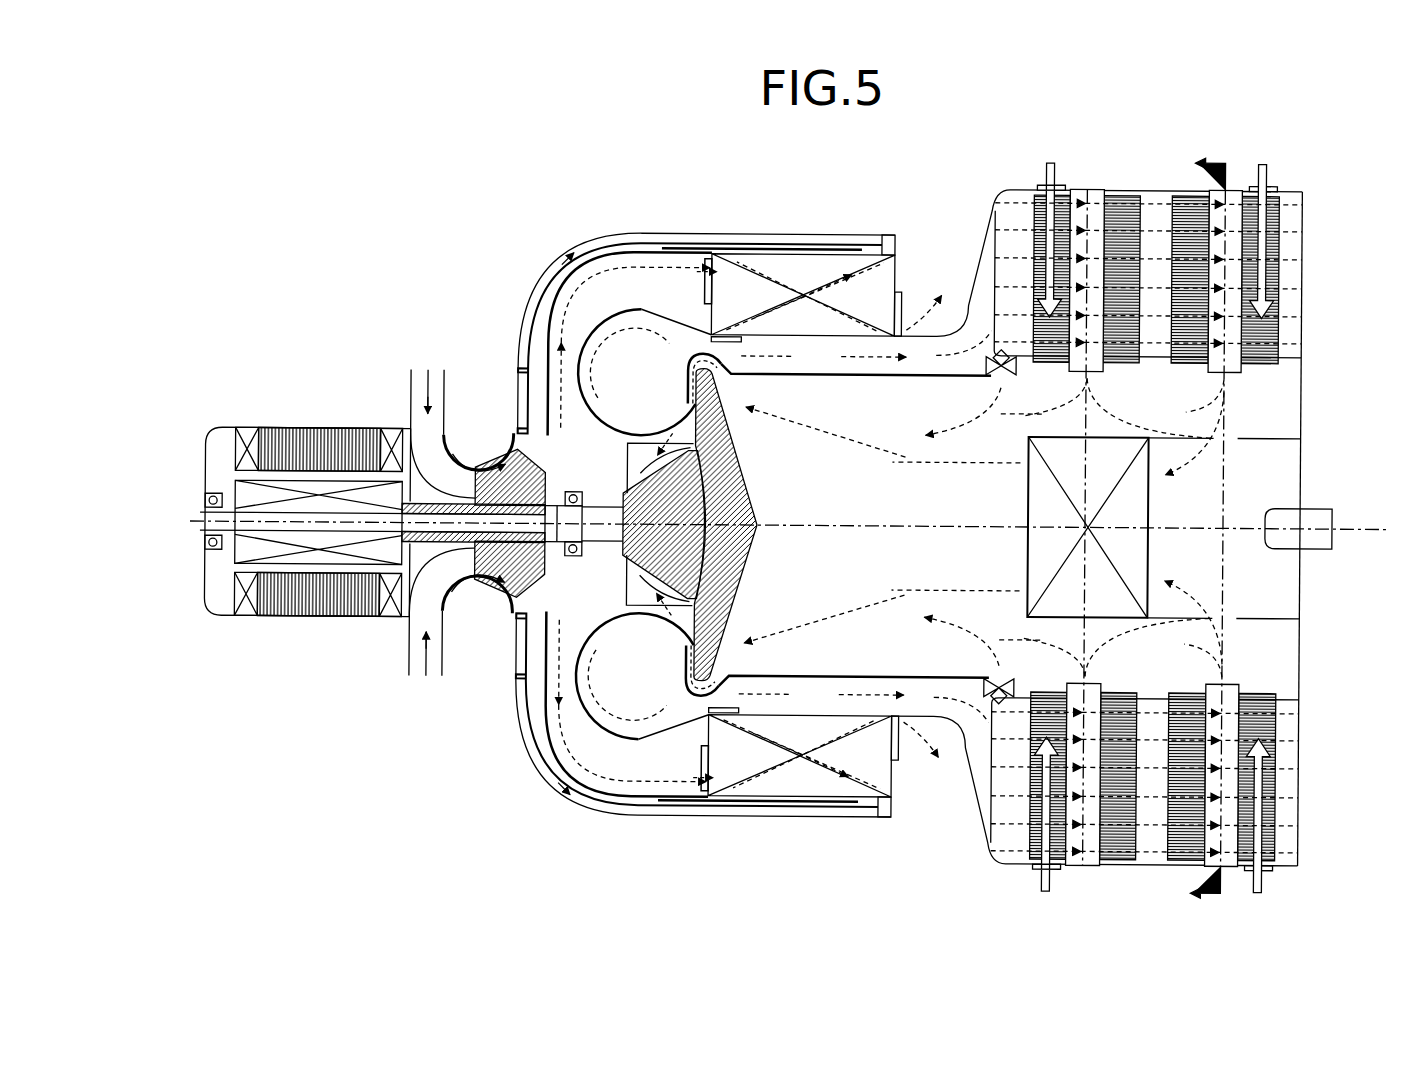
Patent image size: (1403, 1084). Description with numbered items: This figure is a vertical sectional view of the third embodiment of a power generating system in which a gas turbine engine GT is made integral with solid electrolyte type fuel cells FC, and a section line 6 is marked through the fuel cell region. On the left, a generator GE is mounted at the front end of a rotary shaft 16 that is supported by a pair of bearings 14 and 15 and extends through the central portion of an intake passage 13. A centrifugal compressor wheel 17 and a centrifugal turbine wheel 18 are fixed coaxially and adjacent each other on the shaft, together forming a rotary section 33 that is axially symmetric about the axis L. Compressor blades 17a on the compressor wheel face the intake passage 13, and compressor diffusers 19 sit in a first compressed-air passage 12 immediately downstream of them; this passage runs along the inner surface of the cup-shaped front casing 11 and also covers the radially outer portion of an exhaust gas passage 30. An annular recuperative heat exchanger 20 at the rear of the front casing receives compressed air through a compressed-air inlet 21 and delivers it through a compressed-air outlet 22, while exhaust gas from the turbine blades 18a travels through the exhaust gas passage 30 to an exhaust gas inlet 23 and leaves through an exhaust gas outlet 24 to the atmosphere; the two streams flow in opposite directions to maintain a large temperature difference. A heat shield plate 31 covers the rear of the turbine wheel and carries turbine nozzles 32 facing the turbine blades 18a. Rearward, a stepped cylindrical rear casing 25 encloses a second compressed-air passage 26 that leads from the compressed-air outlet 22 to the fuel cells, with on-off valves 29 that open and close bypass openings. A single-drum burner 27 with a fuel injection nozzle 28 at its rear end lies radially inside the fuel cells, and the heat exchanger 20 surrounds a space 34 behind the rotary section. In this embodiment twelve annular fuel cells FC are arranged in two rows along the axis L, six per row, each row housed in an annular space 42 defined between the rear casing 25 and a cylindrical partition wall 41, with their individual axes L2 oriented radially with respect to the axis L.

The front casing 11 is at (618, 230).
The first compressed-air passage 12 is at (584, 240).
The intake passage 13 is at (405, 370).
The bearing 14 is at (222, 432).
The bearing 15 is at (568, 554).
The rotary shaft 16 is at (552, 500).
The compressor wheel 17 is at (533, 463).
The compressor blades 17a is at (490, 460).
The turbine wheel 18 is at (650, 448).
The turbine blades 18a is at (650, 474).
The compressor diffusers 19 is at (518, 370).
The recuperative heat exchanger 20 is at (770, 250).
The compressed-air inlet 21 is at (890, 240).
The compressed-air outlet 22 is at (740, 366).
The exhaust gas inlet 23 is at (705, 284).
The exhaust gas outlet 24 is at (905, 300).
The rear casing 25 is at (1065, 188).
The second compressed-air passage 26 is at (885, 368).
The burner 27 is at (1024, 560).
The fuel injection nozzle 28 is at (1318, 510).
The on-off valves 29 is at (992, 378).
The exhaust gas passage 30 is at (560, 312).
The heat shield plate 31 is at (742, 560).
The turbine nozzles 32 is at (685, 385).
The rotary section 33 is at (582, 396).
The space 34 is at (920, 517).
The cylindrical partition wall 41 is at (1155, 356).
The annular space 42 is at (1153, 210).
The section line 6 is at (1192, 536).
The generator GE is at (306, 425).
The gas turbine engine GT is at (815, 218).
The solid electrolyte type fuel cell FC is at (1030, 222).
The axis L is at (882, 526).
The axes of fuel cells L2 is at (1085, 452).